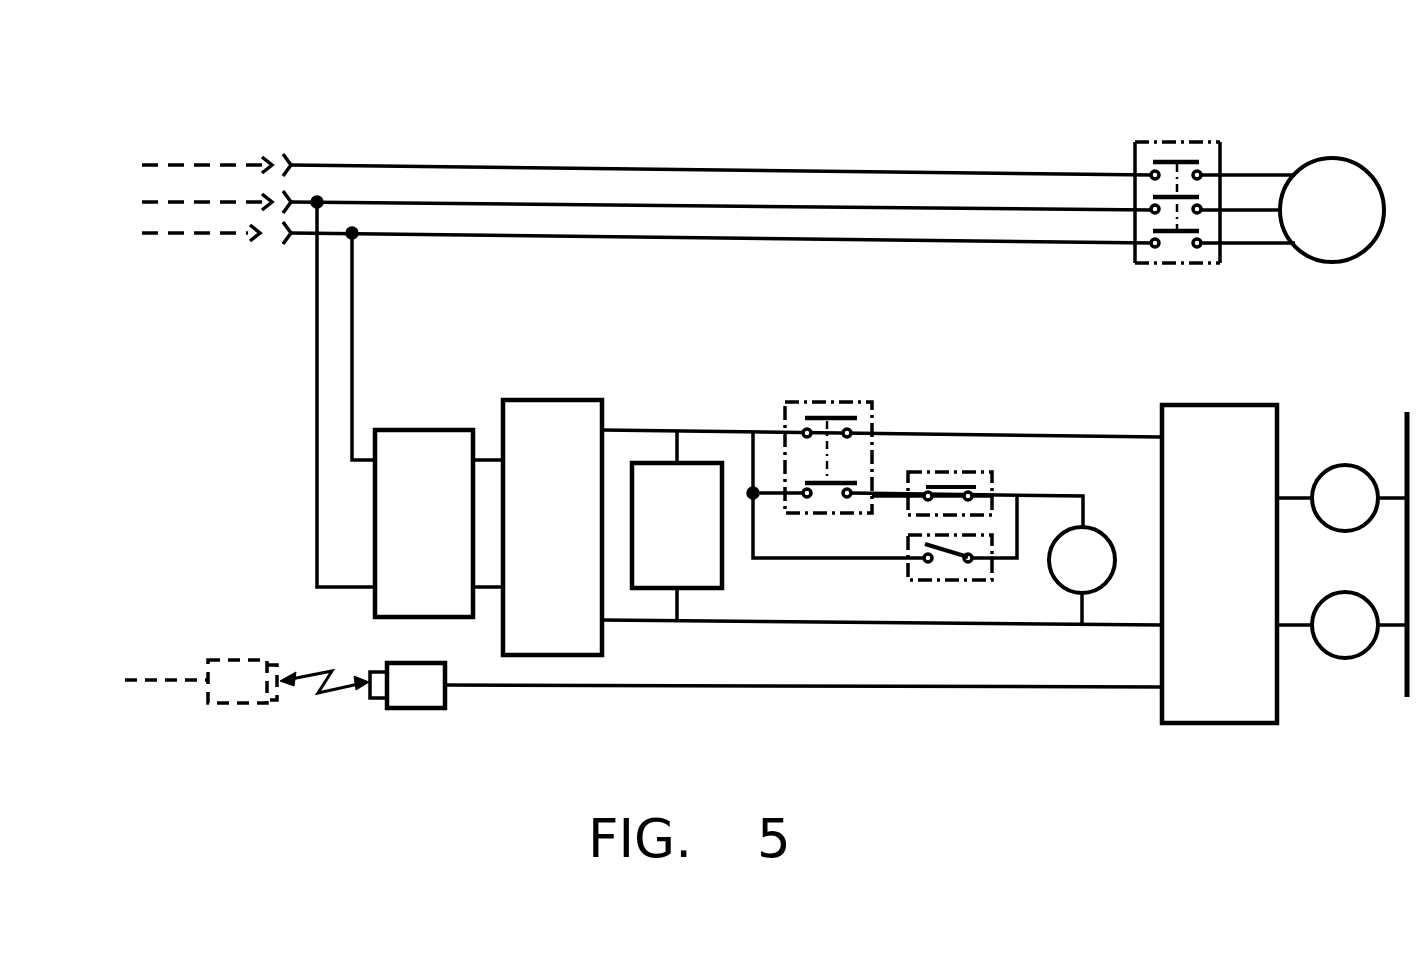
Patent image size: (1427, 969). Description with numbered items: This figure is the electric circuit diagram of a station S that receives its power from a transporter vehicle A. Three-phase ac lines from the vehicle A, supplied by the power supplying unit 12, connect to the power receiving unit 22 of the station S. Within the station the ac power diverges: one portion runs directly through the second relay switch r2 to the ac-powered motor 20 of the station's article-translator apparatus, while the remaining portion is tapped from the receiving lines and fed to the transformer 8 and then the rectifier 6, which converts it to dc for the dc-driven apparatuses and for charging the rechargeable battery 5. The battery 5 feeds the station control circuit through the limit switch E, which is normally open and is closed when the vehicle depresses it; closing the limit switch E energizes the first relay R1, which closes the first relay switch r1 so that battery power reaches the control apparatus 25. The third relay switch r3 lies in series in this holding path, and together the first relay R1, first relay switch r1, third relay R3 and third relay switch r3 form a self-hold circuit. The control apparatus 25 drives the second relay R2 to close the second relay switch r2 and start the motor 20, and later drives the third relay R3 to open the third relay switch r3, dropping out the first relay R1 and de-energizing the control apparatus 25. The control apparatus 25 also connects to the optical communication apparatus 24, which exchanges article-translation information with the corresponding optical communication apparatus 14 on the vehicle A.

The transporter vehicle A is at (226, 158).
The station S is at (338, 158).
The power supplying unit 12 is at (256, 242).
The power receiving unit 22 is at (284, 241).
The second relay switch r2 is at (1155, 140).
The ac-powered motor 20 is at (1332, 210).
The transformer 8 is at (416, 430).
The rectifier 6 is at (557, 400).
The rechargeable battery 5 is at (722, 563).
The first relay switch r1 is at (806, 400).
The third relay switch r3 is at (992, 482).
The limit switch E is at (928, 582).
The first relay R1 is at (1082, 560).
The second relay R2 is at (1345, 498).
The third relay R3 is at (1345, 625).
The control apparatus 25 is at (1212, 725).
The optical communication apparatus 14 is at (250, 706).
The optical communication apparatus 24 is at (412, 710).